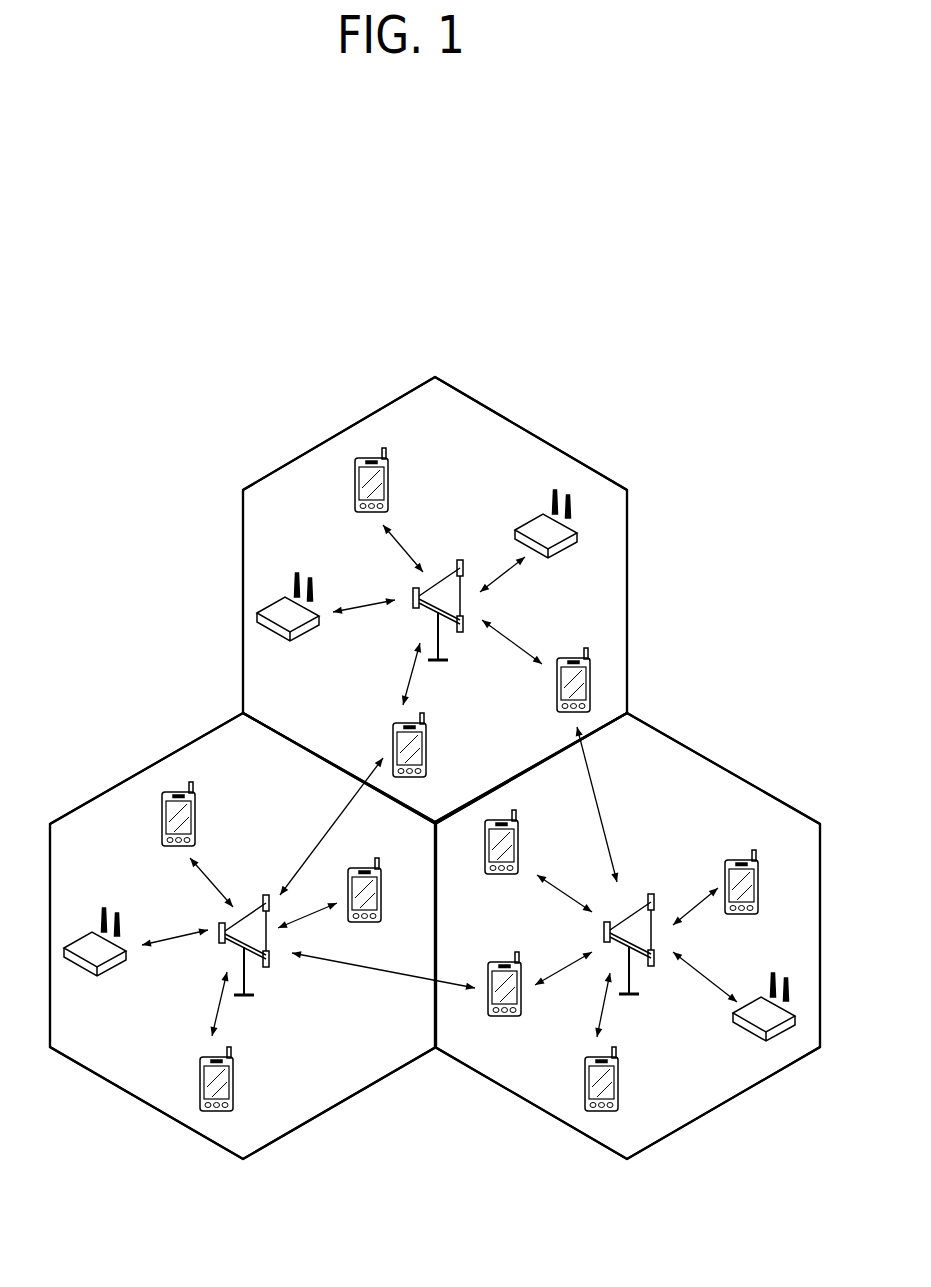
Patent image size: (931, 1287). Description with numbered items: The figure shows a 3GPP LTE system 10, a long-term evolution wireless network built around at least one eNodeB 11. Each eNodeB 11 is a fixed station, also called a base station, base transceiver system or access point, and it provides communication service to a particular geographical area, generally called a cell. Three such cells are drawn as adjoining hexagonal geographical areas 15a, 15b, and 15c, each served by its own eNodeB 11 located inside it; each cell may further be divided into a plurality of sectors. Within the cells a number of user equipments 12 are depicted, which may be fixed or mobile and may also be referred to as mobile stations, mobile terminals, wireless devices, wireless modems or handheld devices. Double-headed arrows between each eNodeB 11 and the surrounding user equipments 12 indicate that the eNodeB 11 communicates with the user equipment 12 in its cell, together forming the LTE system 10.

The 3GPP LTE system 10 is at (712, 496).
The eNodeB 11 is at (456, 570).
The user equipment 12 is at (388, 478).
The geographical area 15a is at (627, 589).
The geographical area 15b is at (748, 778).
The geographical area 15c is at (122, 782).